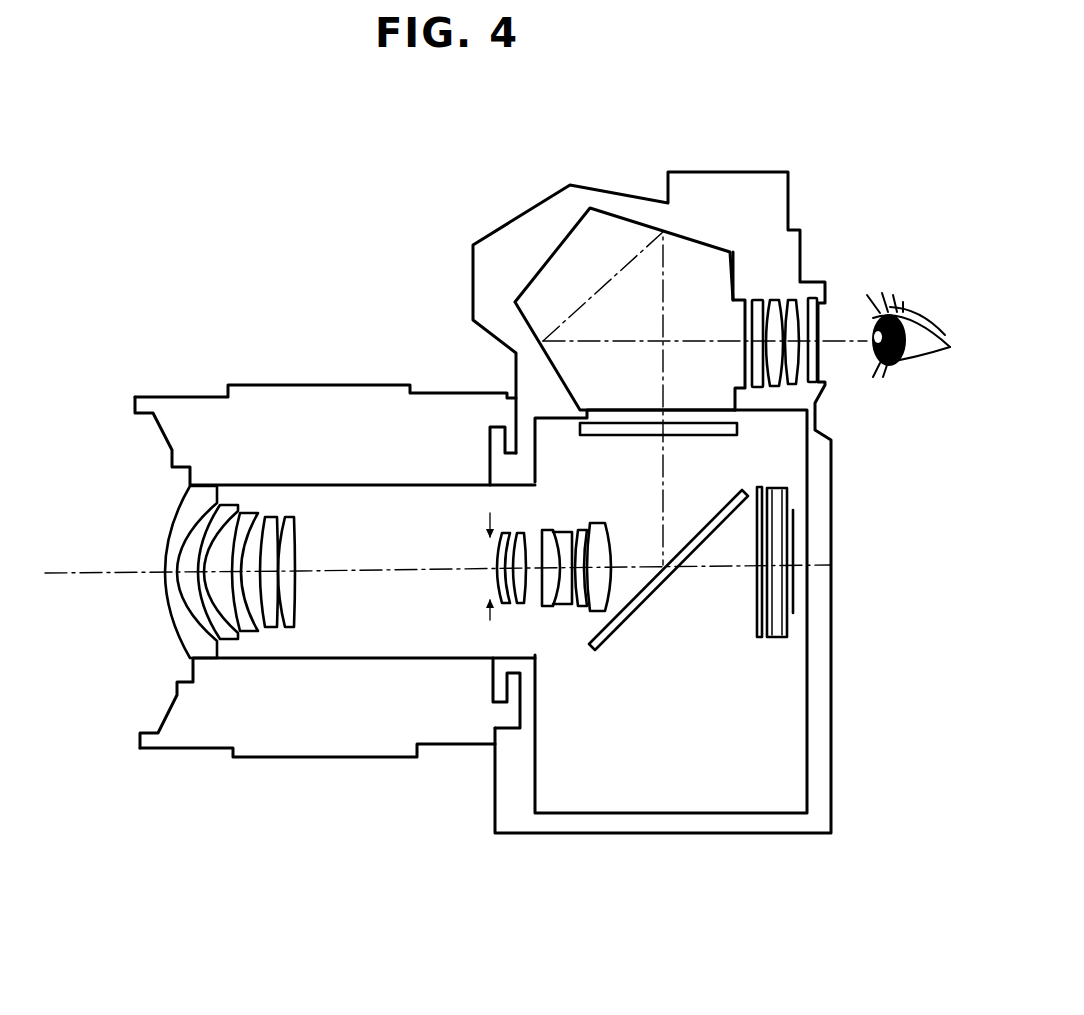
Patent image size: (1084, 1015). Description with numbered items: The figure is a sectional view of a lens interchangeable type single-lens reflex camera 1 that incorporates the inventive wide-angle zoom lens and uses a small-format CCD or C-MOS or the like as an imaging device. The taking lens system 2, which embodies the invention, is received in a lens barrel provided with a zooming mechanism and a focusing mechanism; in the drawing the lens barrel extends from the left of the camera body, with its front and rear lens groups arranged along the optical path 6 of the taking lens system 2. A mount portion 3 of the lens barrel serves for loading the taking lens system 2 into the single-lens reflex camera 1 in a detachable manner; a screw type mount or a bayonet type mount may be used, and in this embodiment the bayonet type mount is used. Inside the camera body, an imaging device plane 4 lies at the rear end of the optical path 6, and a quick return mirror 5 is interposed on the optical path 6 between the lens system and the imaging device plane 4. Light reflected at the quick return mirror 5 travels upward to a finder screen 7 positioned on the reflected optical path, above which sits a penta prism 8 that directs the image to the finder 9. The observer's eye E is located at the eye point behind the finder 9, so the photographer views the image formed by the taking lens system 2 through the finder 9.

The single-lens reflex camera 1 is at (832, 655).
The taking lens system 2 is at (156, 659).
The mount portion 3 is at (498, 712).
The imaging device plane 4 is at (793, 575).
The quick return mirror 5 is at (617, 630).
The optical path 6 is at (78, 556).
The finder screen 7 is at (737, 433).
The penta prism 8 is at (557, 244).
The finder 9 is at (790, 388).
The observer's eye E is at (915, 337).